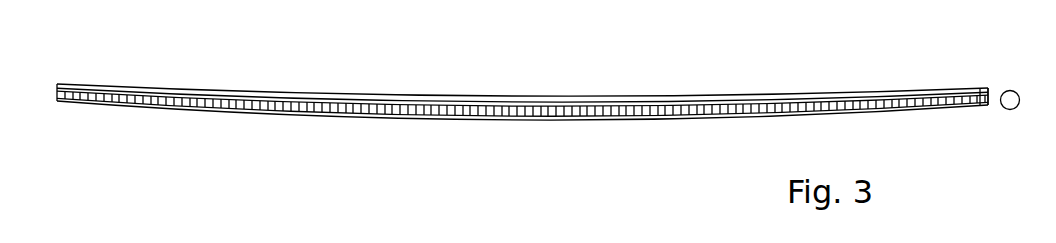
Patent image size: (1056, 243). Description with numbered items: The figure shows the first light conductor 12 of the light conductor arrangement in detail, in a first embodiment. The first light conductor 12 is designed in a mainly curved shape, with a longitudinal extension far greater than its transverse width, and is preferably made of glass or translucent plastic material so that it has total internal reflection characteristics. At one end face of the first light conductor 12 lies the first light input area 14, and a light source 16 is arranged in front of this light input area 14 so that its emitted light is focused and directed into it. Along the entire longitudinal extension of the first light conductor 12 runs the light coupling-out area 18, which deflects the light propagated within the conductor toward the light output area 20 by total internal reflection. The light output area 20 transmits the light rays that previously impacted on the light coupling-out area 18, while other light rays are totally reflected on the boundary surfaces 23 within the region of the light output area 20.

The first light conductor 12 is at (620, 63).
The first light input area 14 is at (988, 104).
The light source 16 is at (1010, 99).
The light coupling-out area 18 is at (473, 108).
The light output area 20 is at (487, 96).
The boundary surfaces 23 is at (737, 103).